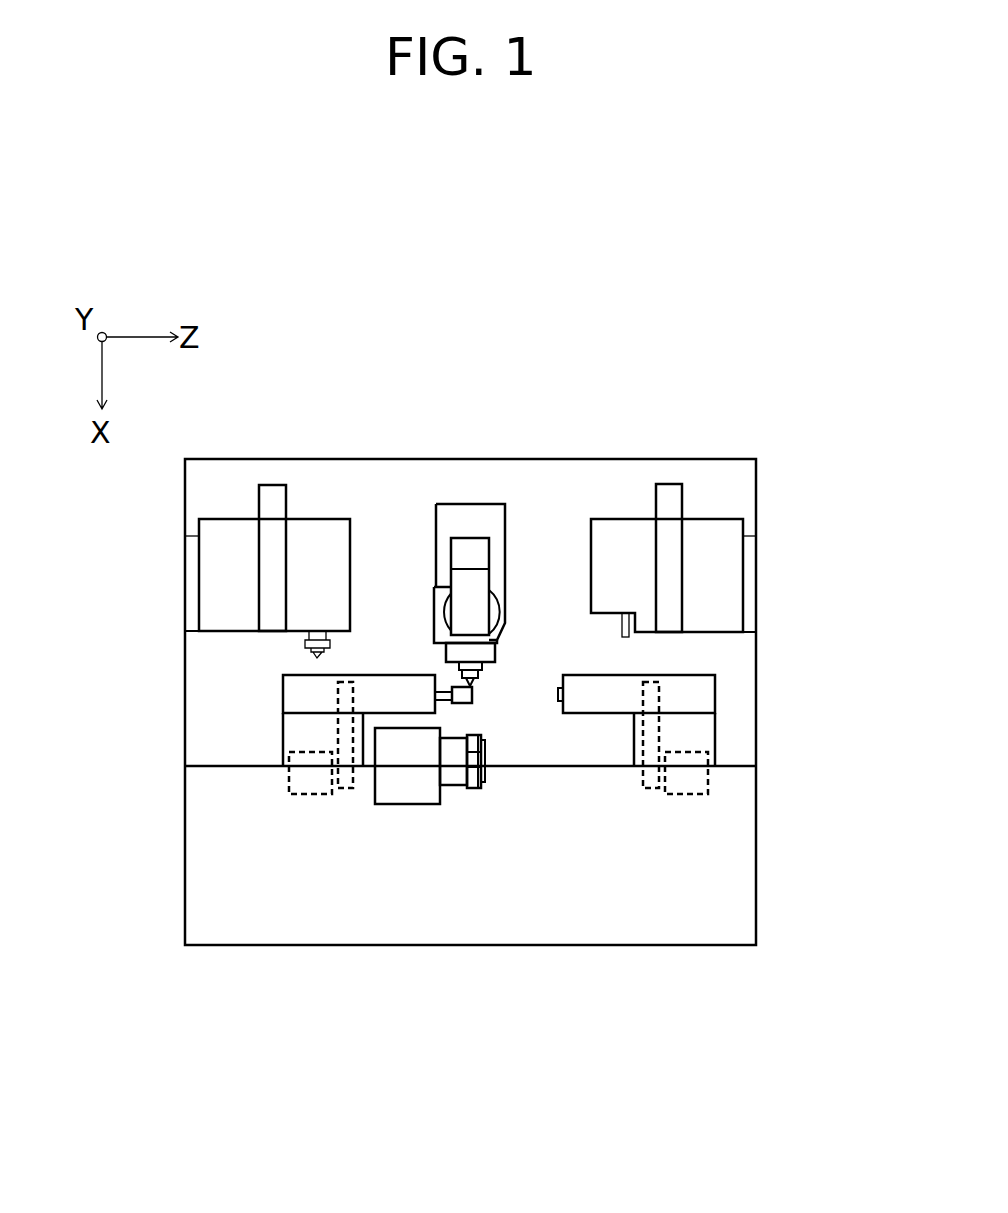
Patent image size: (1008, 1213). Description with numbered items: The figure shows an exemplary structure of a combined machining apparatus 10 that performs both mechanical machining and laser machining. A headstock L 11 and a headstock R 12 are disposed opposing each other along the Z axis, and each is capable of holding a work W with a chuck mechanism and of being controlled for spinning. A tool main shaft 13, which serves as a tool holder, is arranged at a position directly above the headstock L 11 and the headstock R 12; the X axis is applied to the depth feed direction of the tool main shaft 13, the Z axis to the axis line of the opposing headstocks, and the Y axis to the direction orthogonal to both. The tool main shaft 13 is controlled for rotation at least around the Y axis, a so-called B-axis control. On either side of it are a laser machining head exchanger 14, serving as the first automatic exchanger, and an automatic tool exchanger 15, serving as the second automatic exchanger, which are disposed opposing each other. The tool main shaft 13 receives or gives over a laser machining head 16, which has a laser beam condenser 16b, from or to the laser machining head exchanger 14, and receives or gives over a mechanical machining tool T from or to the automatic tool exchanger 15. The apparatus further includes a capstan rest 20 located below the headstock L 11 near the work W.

The combined machining apparatus 10 is at (757, 349).
The headstock L 11 is at (300, 688).
The headstock R 12 is at (696, 692).
The tool main shaft 13 is at (465, 615).
The laser machining head exchanger 14 is at (303, 557).
The automatic tool exchanger 15 is at (622, 563).
The laser machining head 16 is at (483, 652).
The laser beam condenser 16b is at (473, 683).
The capstan rest 20 is at (410, 786).
The work W is at (471, 689).
The mechanical machining tool T is at (632, 640).